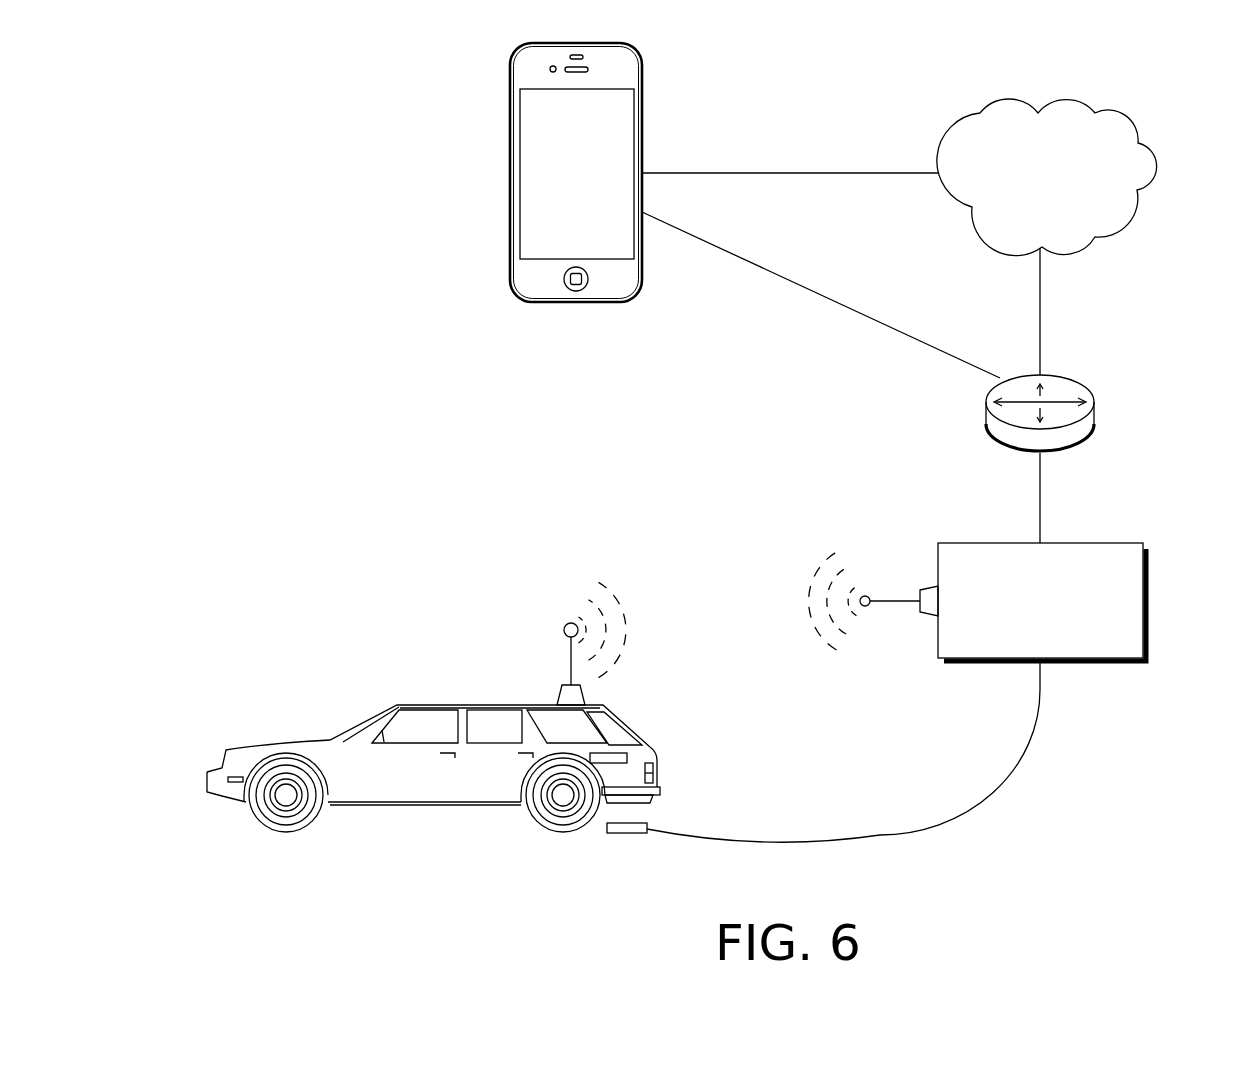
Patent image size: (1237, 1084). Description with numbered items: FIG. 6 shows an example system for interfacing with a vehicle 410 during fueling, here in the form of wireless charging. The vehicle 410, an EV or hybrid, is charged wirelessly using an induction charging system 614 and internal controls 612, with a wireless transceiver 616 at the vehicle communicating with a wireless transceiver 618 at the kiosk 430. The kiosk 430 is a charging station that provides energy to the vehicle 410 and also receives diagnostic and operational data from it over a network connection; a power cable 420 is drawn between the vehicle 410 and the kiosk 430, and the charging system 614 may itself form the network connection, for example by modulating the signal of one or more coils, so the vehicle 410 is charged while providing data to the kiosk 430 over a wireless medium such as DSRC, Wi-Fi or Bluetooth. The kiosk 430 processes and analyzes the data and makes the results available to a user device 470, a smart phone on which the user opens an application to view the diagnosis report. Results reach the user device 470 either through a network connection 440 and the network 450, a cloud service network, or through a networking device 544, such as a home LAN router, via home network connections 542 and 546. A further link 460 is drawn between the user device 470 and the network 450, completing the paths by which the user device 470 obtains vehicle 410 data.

The user device 470 is at (505, 152).
The communication link between mobile device and network 460 is at (758, 166).
The network 450 is at (1025, 186).
The network connection 440 is at (1048, 312).
The networking device 544 is at (1095, 385).
The home network connection 542 is at (1048, 503).
The kiosk 430 is at (1020, 614).
The wireless transceiver 618 is at (895, 585).
The home network connection 546 is at (827, 310).
The power cable 420 is at (1020, 756).
The vehicle 410 is at (363, 717).
The wireless transceiver 616 is at (556, 688).
The internal controls 612 is at (633, 752).
The induction charging system 614 is at (650, 807).